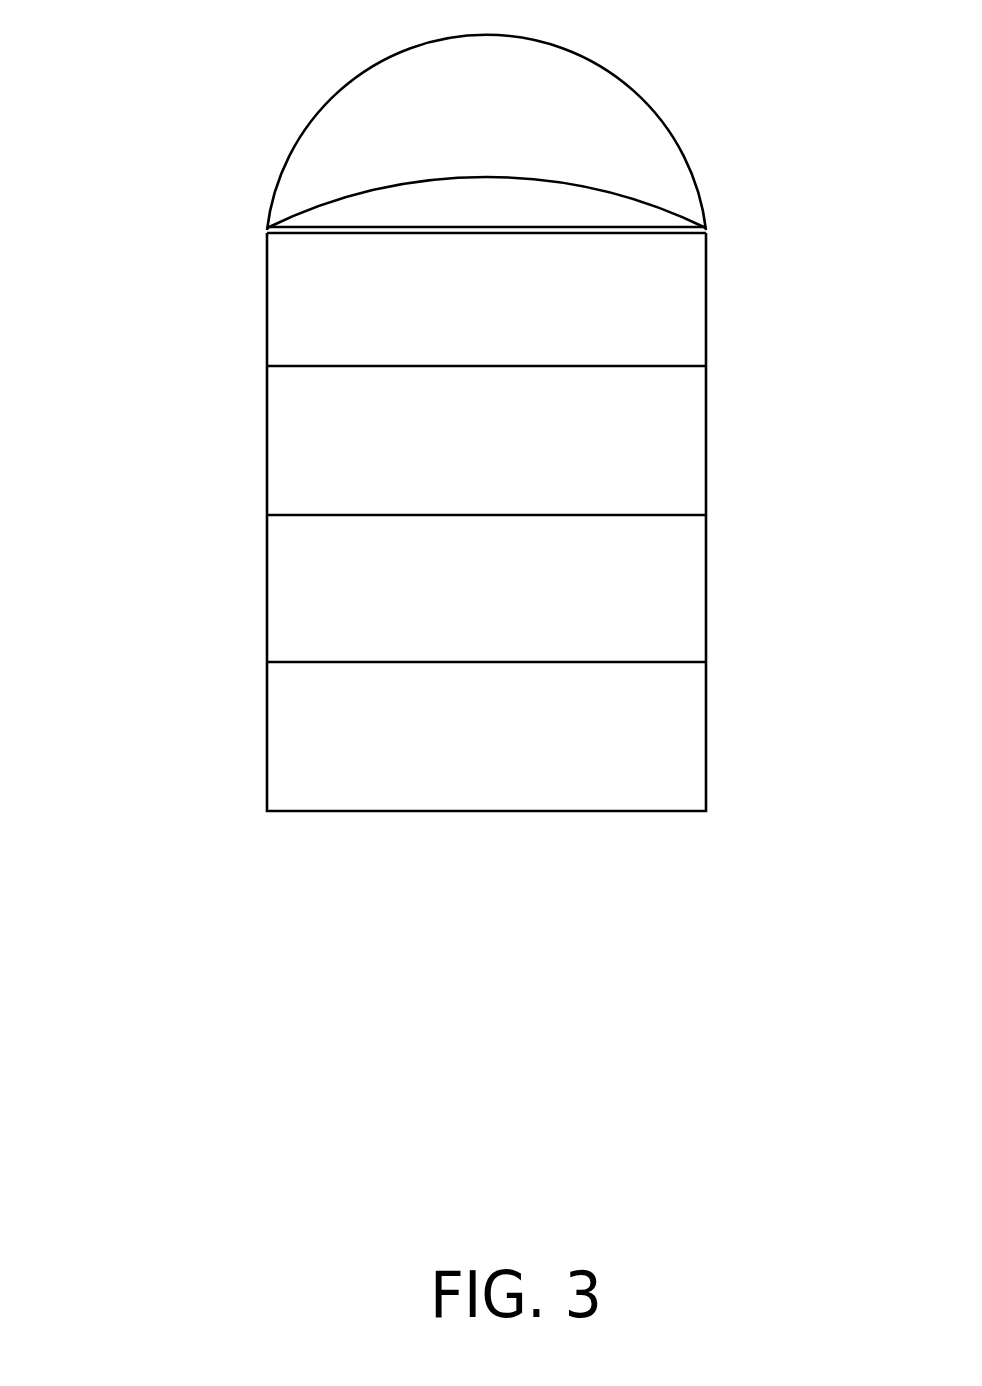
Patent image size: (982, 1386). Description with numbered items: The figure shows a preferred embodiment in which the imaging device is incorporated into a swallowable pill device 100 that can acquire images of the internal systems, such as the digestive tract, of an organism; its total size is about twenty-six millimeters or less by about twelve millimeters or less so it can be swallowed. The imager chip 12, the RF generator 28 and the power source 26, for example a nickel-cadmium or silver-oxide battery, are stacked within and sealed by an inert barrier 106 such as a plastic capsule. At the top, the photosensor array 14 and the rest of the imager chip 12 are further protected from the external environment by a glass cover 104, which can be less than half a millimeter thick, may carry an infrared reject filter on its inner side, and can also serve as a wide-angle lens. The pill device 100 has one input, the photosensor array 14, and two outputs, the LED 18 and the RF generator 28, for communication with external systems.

The pill device 100 is at (795, 257).
The glass cover 104 is at (357, 208).
The imager chip 12 is at (620, 319).
The RF generator 28 is at (555, 463).
The power source 26 is at (620, 607).
The photosensor array 14 is at (506, 207).
The inert barrier 106 is at (640, 93).
The LED 18 is at (297, 202).